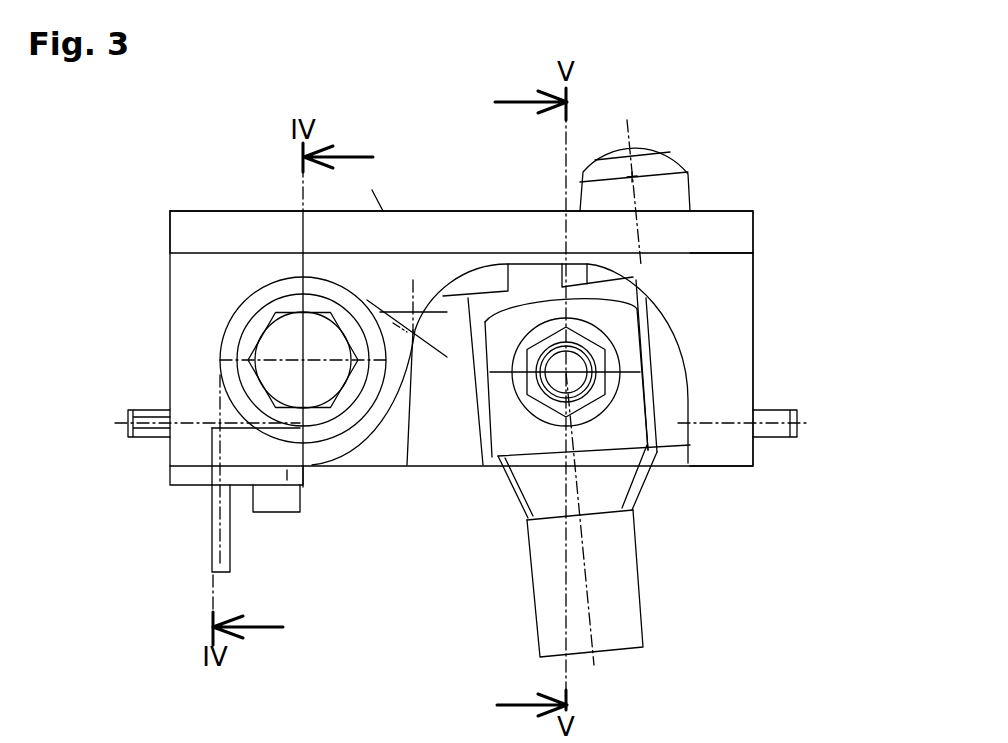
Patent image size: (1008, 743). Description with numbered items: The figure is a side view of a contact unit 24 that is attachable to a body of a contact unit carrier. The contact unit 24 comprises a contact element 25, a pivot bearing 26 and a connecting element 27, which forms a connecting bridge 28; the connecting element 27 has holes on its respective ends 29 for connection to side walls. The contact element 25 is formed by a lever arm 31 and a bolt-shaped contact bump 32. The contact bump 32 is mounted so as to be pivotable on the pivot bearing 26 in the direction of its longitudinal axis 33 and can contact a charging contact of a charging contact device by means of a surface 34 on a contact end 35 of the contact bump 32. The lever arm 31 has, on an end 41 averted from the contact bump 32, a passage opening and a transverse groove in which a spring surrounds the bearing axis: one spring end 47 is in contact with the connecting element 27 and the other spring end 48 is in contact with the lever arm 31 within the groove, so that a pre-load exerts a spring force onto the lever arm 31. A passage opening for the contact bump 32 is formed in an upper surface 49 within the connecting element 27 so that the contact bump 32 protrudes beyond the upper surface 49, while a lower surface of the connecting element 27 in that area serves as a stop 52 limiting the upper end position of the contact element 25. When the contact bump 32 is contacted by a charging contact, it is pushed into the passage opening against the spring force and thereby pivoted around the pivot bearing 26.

The contact unit 24 is at (157, 157).
The contact element 25 is at (467, 477).
The pivot bearing 26 is at (248, 332).
The connecting element 27 is at (428, 207).
The connecting bridge 28 is at (713, 237).
The ends 29 is at (172, 207).
The lever arm 31 is at (388, 450).
The contact bump 32 is at (600, 192).
The longitudinal axis 33 is at (627, 130).
The surface 34 is at (642, 143).
The contact end 35 is at (662, 147).
The end 41 is at (315, 490).
The spring end 47 is at (217, 535).
The spring end 48 is at (500, 291).
The upper surface 49 is at (383, 211).
The stop 52 is at (515, 505).